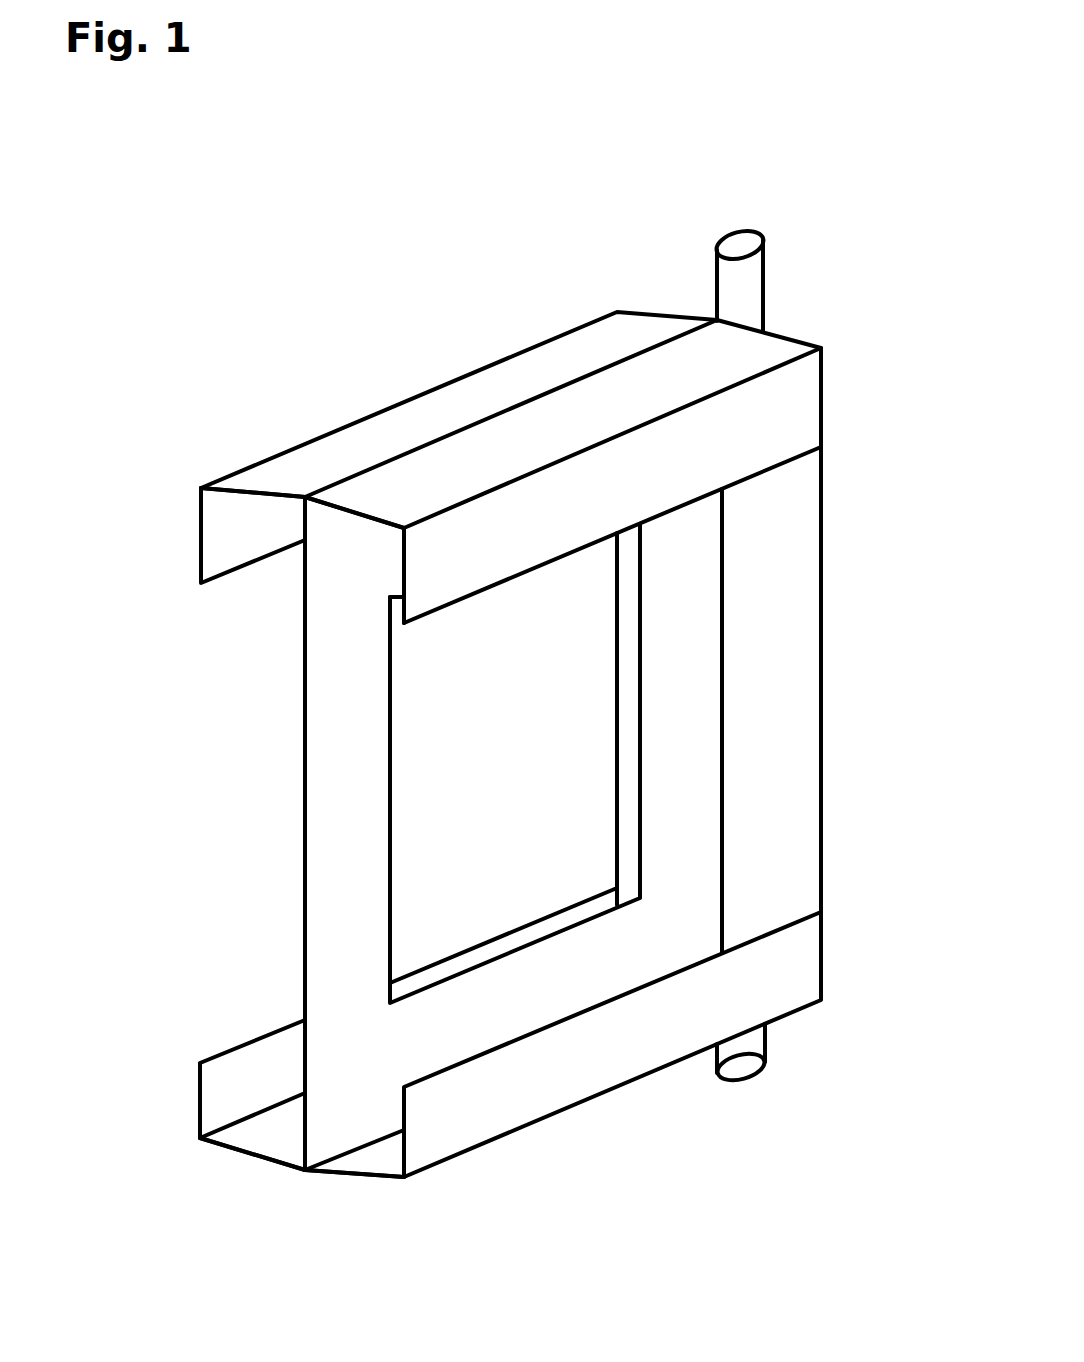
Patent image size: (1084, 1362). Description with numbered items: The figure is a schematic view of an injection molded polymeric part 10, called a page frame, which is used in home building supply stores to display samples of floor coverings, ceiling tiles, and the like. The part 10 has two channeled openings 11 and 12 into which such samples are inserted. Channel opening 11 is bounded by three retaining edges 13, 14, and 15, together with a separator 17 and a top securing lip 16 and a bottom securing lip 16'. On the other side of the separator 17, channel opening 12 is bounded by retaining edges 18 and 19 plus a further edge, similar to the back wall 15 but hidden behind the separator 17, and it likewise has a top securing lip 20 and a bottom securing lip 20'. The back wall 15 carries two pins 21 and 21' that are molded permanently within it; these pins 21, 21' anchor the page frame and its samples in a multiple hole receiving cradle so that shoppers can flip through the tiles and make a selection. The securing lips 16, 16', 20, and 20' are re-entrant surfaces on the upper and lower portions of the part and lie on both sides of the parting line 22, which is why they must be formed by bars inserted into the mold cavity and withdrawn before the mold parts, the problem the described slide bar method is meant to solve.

The injection molded polymeric part 10 is at (616, 236).
The channel opening 11 is at (393, 613).
The channel opening 12 is at (292, 558).
The retaining edge 13 is at (380, 517).
The retaining edge 14 is at (363, 1175).
The back wall 15 is at (760, 760).
The top securing lip 16 is at (612, 569).
The bottom securing lip 16' is at (612, 1006).
The separator 17 is at (338, 787).
The retaining edge 18 is at (277, 493).
The retaining edge 19 is at (245, 1155).
The top securing lip 20 is at (222, 519).
The bottom securing lip 20' is at (252, 1045).
The pin 21 is at (783, 270).
The pin 21' is at (788, 1068).
The parting line 22 is at (502, 407).